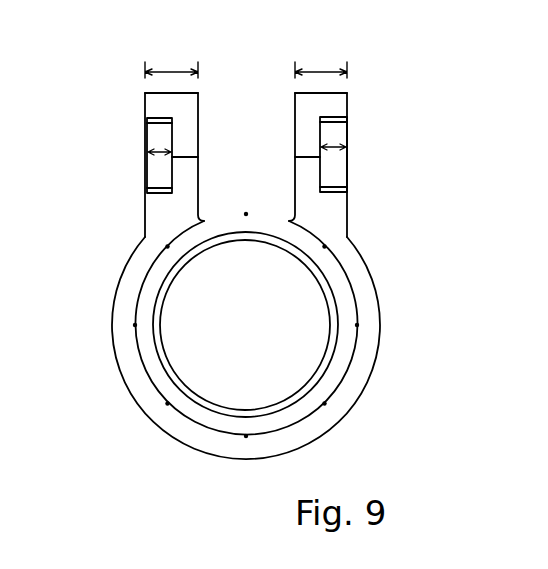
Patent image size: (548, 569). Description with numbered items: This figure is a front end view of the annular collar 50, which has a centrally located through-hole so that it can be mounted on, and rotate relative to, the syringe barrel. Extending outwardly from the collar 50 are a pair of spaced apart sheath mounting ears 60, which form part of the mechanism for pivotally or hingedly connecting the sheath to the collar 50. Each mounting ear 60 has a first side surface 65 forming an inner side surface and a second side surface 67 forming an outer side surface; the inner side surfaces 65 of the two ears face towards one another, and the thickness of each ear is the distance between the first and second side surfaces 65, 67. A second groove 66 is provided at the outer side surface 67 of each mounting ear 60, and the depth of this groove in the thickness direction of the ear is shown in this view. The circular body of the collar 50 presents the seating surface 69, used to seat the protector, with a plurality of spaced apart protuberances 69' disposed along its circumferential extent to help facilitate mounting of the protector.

The collar 50 is at (399, 268).
The sheath mounting ears 60 is at (177, 107).
The first side surface 65 is at (200, 140).
The second groove 66 is at (152, 190).
The second side surface 67 is at (145, 108).
The seating surface 69 is at (272, 345).
The protuberances 69' is at (253, 372).